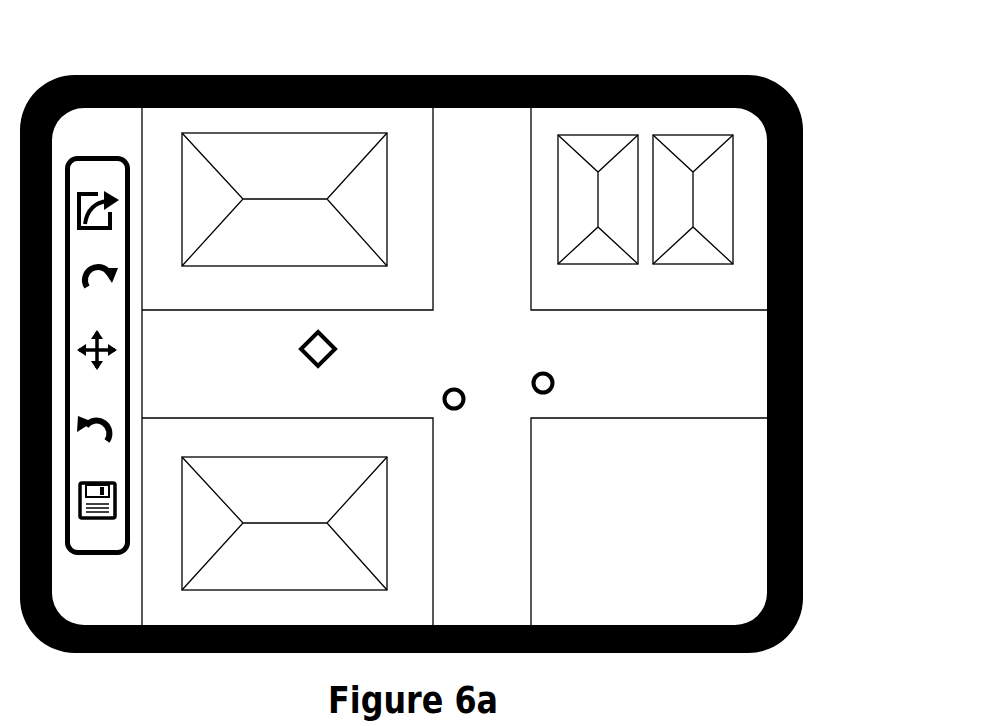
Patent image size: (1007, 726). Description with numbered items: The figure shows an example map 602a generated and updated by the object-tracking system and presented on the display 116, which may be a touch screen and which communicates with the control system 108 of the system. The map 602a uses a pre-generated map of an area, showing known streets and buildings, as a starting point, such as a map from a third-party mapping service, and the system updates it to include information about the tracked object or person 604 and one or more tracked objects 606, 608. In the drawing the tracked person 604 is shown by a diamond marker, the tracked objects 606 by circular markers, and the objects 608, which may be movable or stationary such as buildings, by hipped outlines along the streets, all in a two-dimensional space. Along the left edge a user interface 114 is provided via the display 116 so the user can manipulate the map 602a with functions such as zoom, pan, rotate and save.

The control system 108 is at (806, 151).
The user interface 114 is at (137, 666).
The display 116 is at (454, 366).
The map 602a is at (675, 502).
The tracked object or person 604 is at (300, 347).
The tracked object 606 is at (443, 397).
The object 608 is at (304, 267).